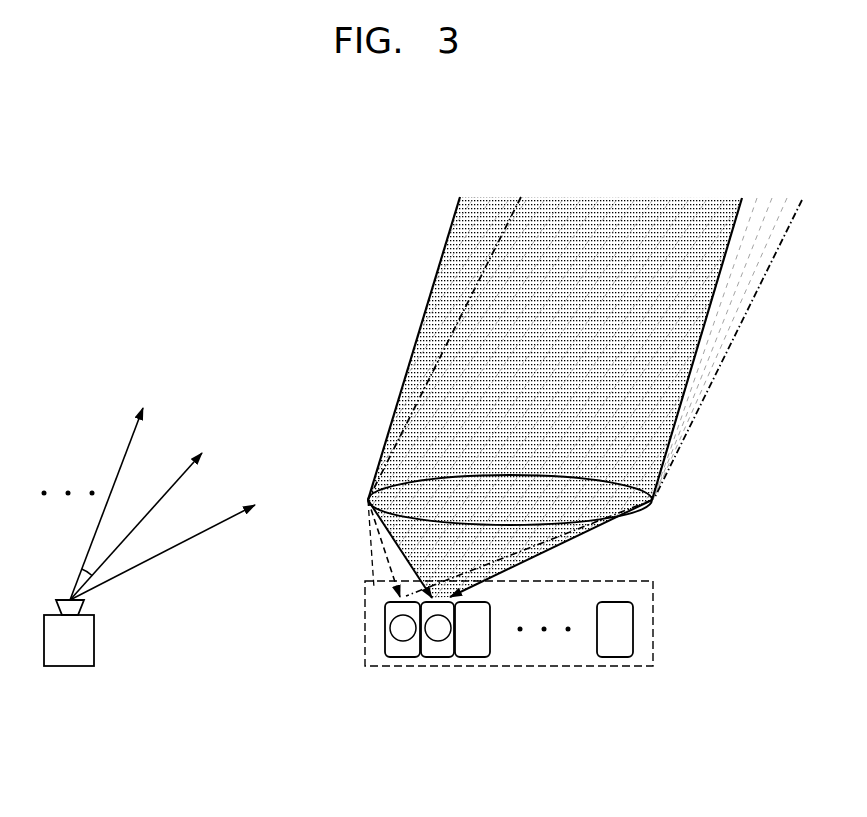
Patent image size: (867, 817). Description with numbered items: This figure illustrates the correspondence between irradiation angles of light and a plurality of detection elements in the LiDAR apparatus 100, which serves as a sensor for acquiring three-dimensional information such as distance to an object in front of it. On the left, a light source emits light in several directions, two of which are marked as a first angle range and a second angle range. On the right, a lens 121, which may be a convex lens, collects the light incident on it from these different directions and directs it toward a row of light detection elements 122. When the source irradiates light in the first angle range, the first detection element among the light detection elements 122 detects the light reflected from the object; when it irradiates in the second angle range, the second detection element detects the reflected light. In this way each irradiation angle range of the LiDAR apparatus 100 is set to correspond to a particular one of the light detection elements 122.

The LiDAR apparatus 100 is at (94, 641).
The lens 121 is at (655, 498).
The light detection elements 122 is at (654, 622).